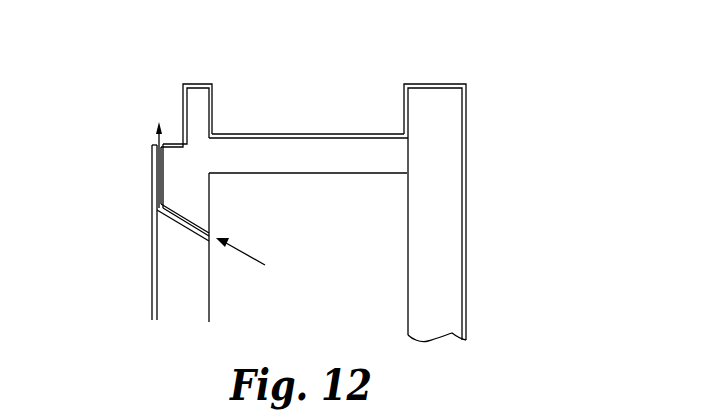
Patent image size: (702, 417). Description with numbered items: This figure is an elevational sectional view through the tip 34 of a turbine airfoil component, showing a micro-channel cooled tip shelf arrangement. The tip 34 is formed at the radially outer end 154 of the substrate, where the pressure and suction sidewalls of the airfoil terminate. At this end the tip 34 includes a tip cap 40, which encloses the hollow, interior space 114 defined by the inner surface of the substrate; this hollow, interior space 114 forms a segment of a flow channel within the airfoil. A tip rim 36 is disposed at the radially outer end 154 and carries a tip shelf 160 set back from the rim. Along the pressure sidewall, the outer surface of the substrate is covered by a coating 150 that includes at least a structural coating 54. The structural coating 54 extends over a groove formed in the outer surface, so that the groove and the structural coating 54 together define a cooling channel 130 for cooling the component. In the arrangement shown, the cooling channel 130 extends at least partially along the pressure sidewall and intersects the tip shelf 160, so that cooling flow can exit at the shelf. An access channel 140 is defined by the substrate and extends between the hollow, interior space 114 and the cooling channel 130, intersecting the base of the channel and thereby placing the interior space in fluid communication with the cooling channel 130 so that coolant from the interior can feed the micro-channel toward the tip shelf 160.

The tip 34 is at (303, 178).
The tip rim 36 is at (198, 100).
The tip cap 40 is at (312, 128).
The radially outer end 154 is at (424, 132).
The hollow, interior space 114 is at (233, 294).
The access channel 140 is at (193, 235).
The cooling channel 130 is at (152, 166).
The coating 150 is at (98, 232).
The structural coating 54 is at (157, 225).
The tip shelf 160 is at (152, 146).